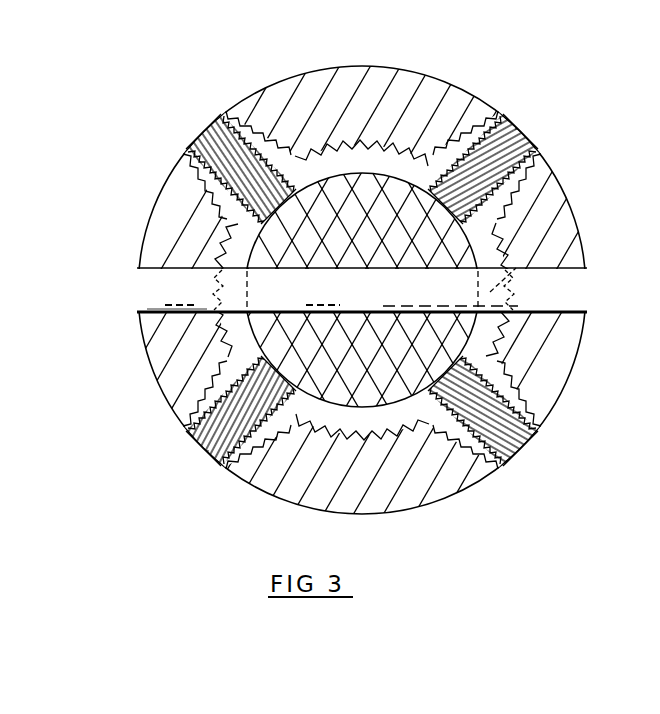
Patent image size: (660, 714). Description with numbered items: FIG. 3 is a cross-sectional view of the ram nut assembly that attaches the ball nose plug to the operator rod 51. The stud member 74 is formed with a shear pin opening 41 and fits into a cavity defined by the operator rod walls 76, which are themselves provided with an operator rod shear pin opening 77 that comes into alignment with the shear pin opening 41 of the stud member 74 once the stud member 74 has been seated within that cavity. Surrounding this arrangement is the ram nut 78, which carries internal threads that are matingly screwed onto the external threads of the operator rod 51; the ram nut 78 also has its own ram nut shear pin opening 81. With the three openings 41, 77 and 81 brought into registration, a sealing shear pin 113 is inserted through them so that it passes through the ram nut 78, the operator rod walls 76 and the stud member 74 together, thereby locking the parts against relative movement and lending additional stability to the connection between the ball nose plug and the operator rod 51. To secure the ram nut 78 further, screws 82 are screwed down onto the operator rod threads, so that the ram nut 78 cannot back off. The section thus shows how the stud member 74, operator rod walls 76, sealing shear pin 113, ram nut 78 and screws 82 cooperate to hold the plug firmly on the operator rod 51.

The ram nut 78 is at (350, 80).
The operator rod walls 76 is at (382, 132).
The screws 82 is at (203, 138).
The operator rod 51 is at (237, 245).
The operator rod shear pin opening 77 is at (527, 266).
The sealing shear pin 113 is at (572, 289).
The ram nut shear pin opening 81 is at (179, 292).
The shear pin opening 41 is at (323, 292).
The stud member 74 is at (381, 372).